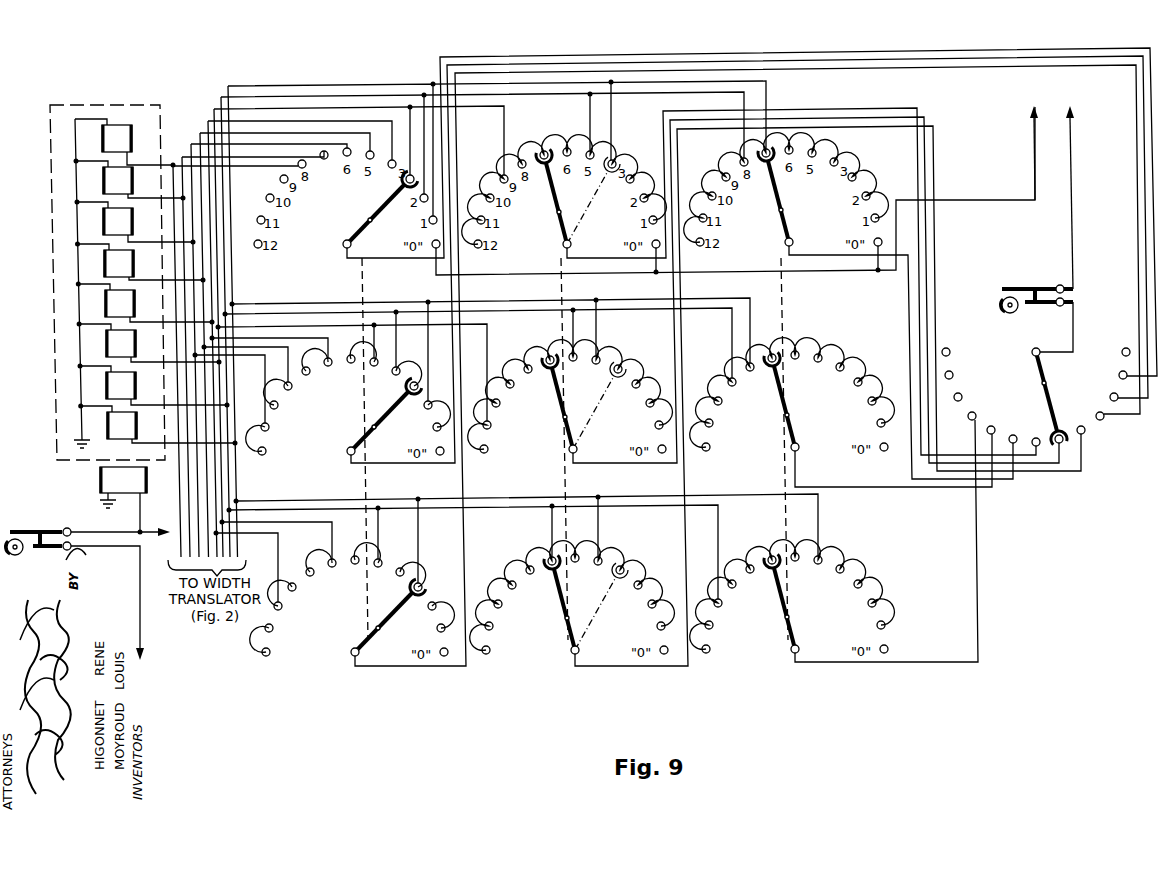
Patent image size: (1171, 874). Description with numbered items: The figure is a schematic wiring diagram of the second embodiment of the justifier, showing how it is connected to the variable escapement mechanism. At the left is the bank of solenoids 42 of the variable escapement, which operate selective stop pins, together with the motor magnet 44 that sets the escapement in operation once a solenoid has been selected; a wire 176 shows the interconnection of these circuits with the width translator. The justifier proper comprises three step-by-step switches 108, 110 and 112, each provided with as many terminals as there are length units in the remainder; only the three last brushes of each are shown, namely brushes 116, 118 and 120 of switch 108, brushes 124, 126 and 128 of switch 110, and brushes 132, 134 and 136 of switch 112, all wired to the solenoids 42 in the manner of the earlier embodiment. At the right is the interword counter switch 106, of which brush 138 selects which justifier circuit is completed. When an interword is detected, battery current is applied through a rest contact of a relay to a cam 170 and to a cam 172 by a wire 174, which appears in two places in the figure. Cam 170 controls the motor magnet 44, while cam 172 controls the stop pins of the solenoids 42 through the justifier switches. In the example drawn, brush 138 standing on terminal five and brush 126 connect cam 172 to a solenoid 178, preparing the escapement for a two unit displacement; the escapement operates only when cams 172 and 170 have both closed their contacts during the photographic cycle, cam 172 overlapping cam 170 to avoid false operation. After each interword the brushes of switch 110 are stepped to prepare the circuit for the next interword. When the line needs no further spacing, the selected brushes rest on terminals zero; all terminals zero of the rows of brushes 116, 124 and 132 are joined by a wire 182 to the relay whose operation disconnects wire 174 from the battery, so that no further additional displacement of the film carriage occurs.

The solenoids 42 is at (123, 271).
The motor magnet 44 is at (123, 499).
The step-by-step switch (interword counter) 106 is at (1036, 374).
The step-by-step switch 108 is at (350, 421).
The step-by-step switch 110 is at (568, 412).
The step-by-step switch 112 is at (789, 410).
The brush 116 is at (373, 222).
The brush 118 is at (379, 422).
The brush 120 is at (383, 624).
The brush 124 is at (557, 208).
The brush 126 is at (559, 417).
The brush 128 is at (565, 618).
The brush 132 is at (778, 208).
The brush 134 is at (786, 412).
The brush 136 is at (785, 616).
The brush 138 is at (1044, 386).
The cam 170 is at (22, 553).
The cam 172 is at (1002, 300).
The wire 174 is at (140, 562).
The wire 176 is at (170, 516).
The solenoid 178 is at (118, 387).
The wire 182 is at (1035, 138).